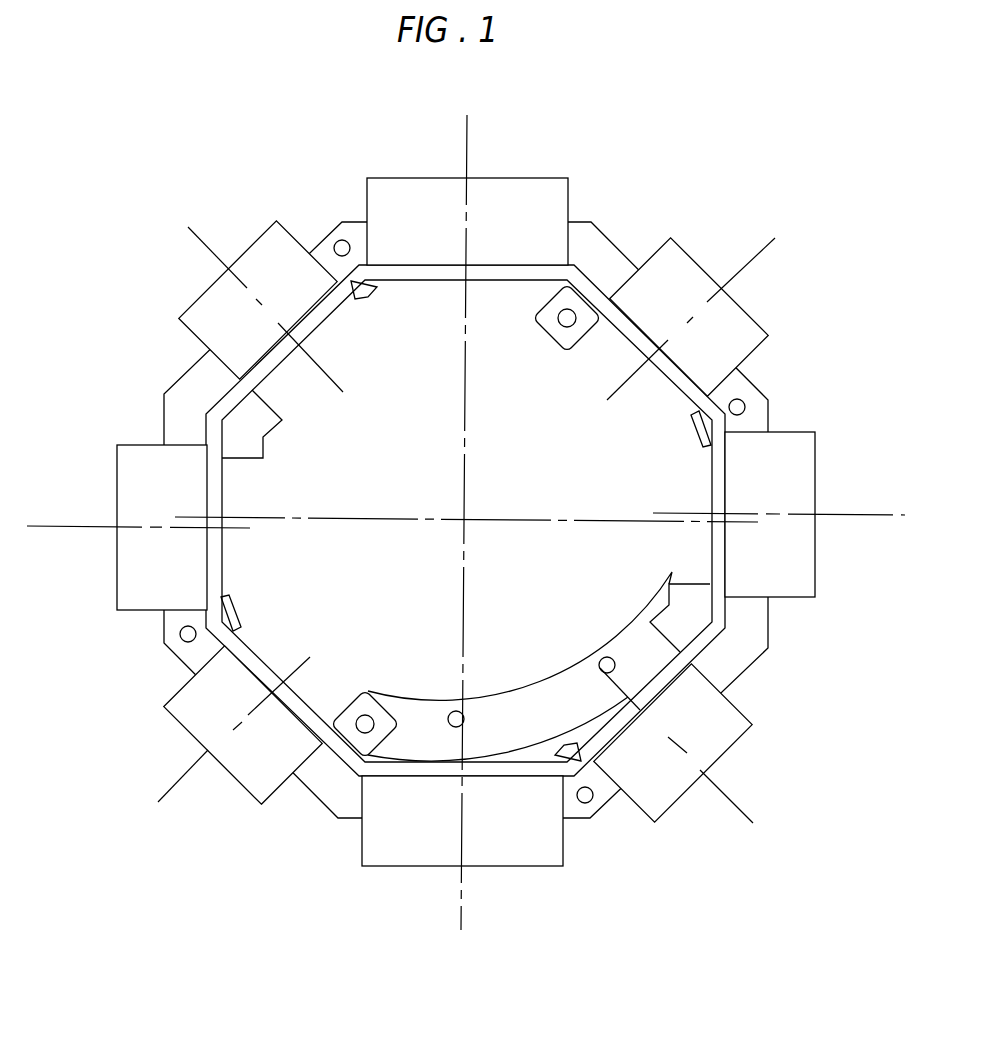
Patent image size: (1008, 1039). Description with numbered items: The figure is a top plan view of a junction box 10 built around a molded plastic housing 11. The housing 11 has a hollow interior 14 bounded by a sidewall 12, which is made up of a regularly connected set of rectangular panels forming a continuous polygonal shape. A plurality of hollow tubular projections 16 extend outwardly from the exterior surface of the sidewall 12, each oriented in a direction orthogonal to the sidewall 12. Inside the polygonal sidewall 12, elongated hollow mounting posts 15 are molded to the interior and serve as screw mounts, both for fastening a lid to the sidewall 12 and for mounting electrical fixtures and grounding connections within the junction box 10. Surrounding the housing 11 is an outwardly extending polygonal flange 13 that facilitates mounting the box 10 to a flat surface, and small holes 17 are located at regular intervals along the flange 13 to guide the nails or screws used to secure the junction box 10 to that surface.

The junction box 10 is at (501, 493).
The molded plastic housing 11 is at (762, 387).
The sidewall 12 is at (725, 612).
The polygonal flange 13 is at (722, 667).
The hollow interior 14 is at (466, 521).
The hollow mounting posts 15 is at (353, 743).
The hollow tubular projections 16 is at (665, 810).
The small holes 17 is at (181, 641).